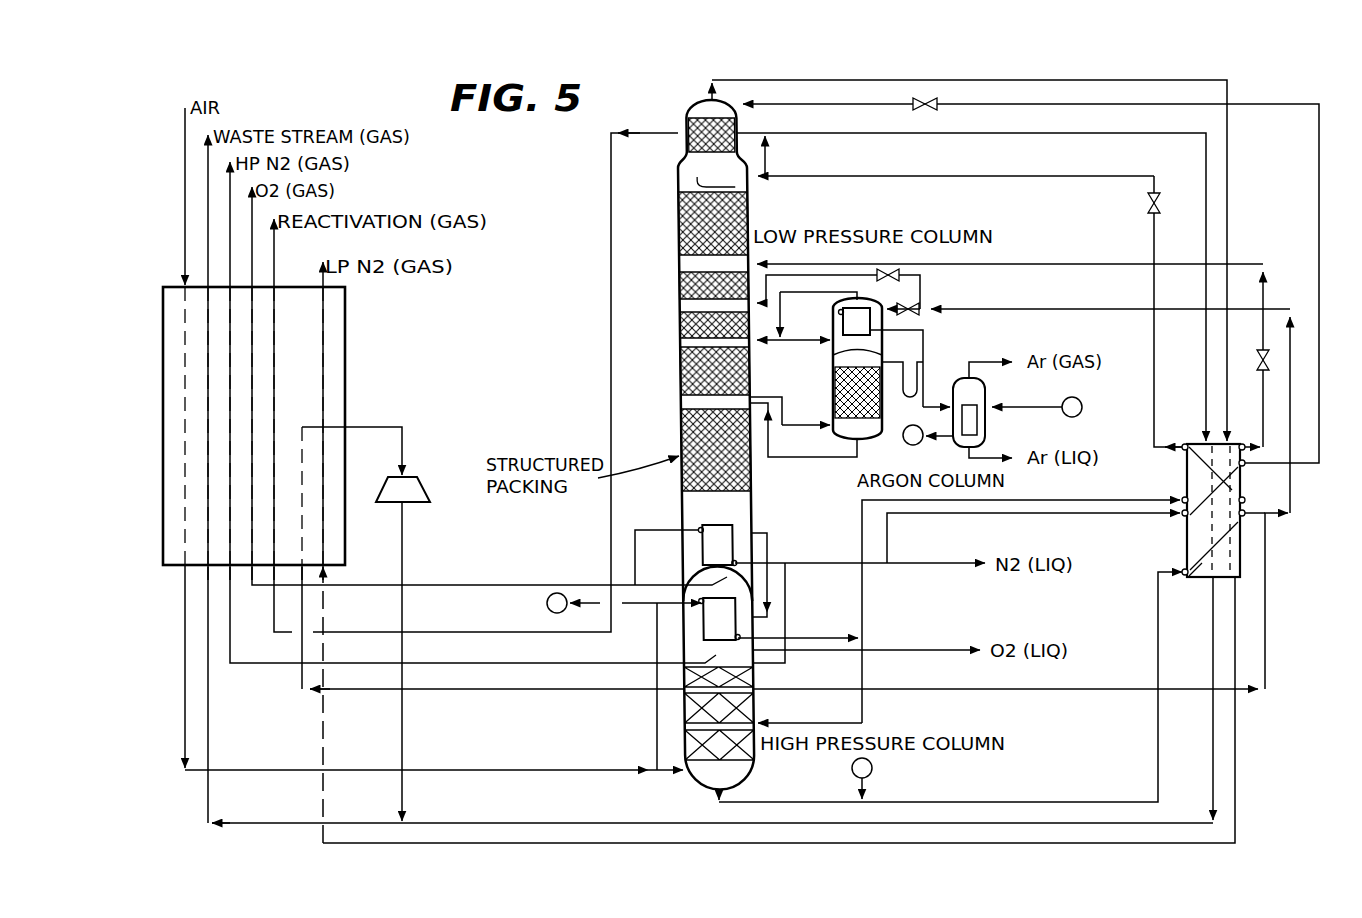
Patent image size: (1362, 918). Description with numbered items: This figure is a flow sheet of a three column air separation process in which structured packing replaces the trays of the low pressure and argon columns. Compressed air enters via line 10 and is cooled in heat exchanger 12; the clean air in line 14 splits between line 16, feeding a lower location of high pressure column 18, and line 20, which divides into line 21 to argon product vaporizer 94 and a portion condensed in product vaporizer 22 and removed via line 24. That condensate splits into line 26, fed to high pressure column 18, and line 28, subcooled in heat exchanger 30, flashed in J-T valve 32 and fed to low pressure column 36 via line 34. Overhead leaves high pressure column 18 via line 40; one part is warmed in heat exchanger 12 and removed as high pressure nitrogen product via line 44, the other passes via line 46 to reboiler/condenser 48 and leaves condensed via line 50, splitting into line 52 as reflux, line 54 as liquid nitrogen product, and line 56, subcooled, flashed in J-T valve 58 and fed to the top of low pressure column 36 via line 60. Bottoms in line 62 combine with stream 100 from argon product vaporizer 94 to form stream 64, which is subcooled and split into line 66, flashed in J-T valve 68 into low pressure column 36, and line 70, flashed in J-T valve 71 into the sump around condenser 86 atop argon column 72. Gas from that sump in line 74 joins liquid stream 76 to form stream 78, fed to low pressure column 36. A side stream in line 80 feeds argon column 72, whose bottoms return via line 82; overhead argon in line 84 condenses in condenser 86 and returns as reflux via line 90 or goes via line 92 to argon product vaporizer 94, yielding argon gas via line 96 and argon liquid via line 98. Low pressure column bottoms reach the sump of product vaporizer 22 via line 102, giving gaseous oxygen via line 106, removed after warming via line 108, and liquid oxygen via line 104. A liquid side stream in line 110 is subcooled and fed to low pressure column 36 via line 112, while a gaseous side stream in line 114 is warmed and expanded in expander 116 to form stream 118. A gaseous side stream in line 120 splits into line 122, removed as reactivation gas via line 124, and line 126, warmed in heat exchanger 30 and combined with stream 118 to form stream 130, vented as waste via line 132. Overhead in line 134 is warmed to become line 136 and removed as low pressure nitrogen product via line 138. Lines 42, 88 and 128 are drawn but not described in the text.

The line 10 is at (182, 146).
The heat exchanger 12 is at (313, 365).
The line 14 is at (271, 773).
The line 16 is at (670, 775).
The high pressure column 18 is at (746, 756).
The line 20 is at (655, 729).
The line 21 is at (1017, 409).
The product vaporizer 22 is at (719, 633).
The line 24 is at (837, 638).
The line 26 is at (862, 706).
The line 28 is at (1100, 501).
The heat exchanger 30 is at (1185, 544).
The J-T valve 32 is at (1258, 361).
The line 34 is at (1028, 266).
The low pressure column 36 is at (750, 257).
The line 40 is at (655, 667).
The reflux line 42 is at (559, 665).
The line 44 is at (229, 220).
The line 46 is at (636, 546).
The reboiler/condenser 48 is at (712, 524).
The line 50 is at (779, 559).
The line 52 is at (786, 601).
The line 54 is at (916, 561).
The line 56 is at (1047, 519).
The J-T valve 58 is at (934, 112).
The line 60 is at (784, 106).
The line 62 is at (788, 801).
The combined oxygen-enriched liquid stream 64 is at (1022, 801).
The line 66 is at (918, 304).
The J-T valve 68 is at (900, 277).
The line 70 is at (923, 313).
The J-T valve 71 is at (905, 306).
The argon column 72 is at (872, 440).
The line 74 is at (781, 321).
The liquid stream 76 is at (762, 344).
The combined stream 78 is at (768, 399).
The line 80 is at (784, 405).
The line 82 is at (820, 458).
The line 84 is at (834, 359).
The condenser 86 is at (840, 306).
The argon condenser outlet line 88 is at (924, 353).
The line 90 is at (902, 390).
The line 92 is at (937, 403).
The argon product vaporizer 94 is at (985, 385).
The line 96 is at (987, 361).
The line 98 is at (994, 453).
The stream 100 is at (945, 438).
The line 102 is at (768, 546).
The line 104 is at (900, 651).
The line 106 is at (690, 583).
The line 108 is at (252, 245).
The line 110 is at (838, 688).
The line 112 is at (970, 160).
The line 114 is at (514, 691).
The expander 116 is at (414, 499).
The stream 118 is at (403, 796).
The line 120 is at (761, 187).
The line 122 is at (607, 171).
The line 124 is at (276, 259).
The line 126 is at (1066, 134).
The line from heat exchanger 128 is at (1213, 616).
The combined stream 130 is at (245, 821).
The line 132 is at (207, 178).
The line 134 is at (895, 81).
The line 136 is at (1244, 721).
The line 138 is at (320, 276).